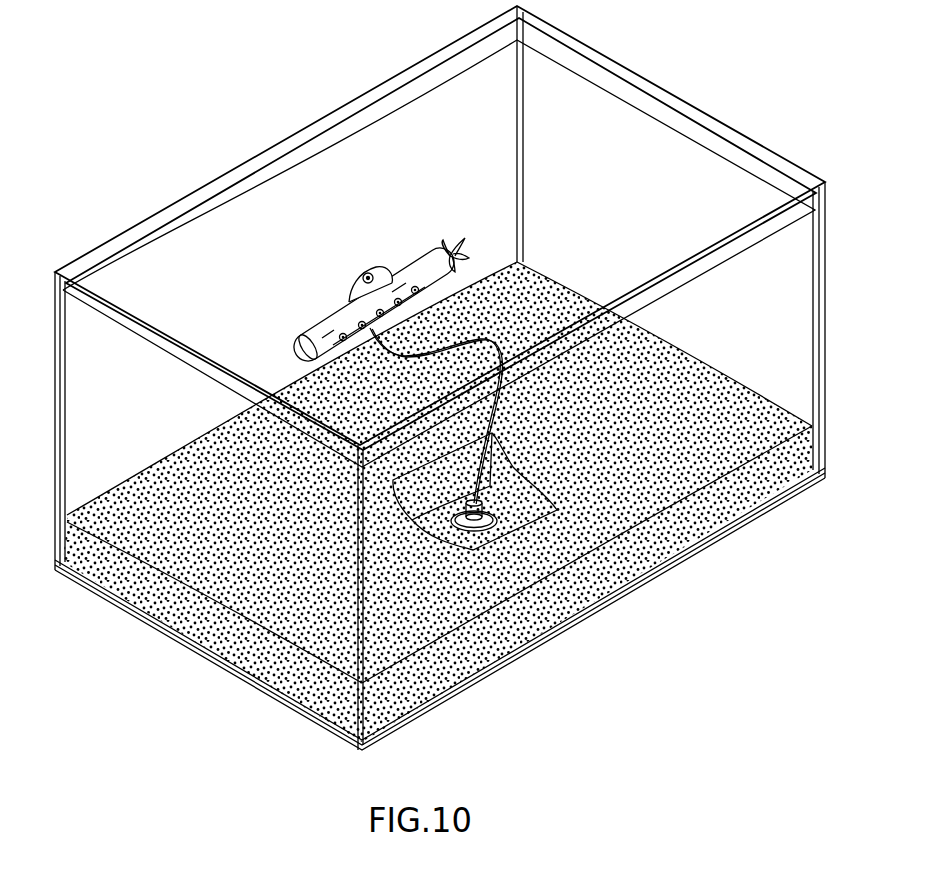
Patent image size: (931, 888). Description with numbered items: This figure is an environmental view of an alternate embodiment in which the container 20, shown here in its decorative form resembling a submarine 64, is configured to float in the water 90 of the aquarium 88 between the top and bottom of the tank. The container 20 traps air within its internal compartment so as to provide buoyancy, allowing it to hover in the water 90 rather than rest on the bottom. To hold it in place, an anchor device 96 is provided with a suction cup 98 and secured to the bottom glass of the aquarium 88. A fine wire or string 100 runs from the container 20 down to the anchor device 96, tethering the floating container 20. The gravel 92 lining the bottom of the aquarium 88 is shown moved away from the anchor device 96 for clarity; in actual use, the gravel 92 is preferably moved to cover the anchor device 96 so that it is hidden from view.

The container 20 is at (381, 284).
The submarine 64 is at (316, 312).
The aquarium 88 is at (414, 64).
The water 90 is at (568, 162).
The gravel 92 is at (622, 576).
The anchor device 96 is at (487, 507).
The suction cup 98 is at (459, 512).
The fine wire or string 100 is at (487, 339).